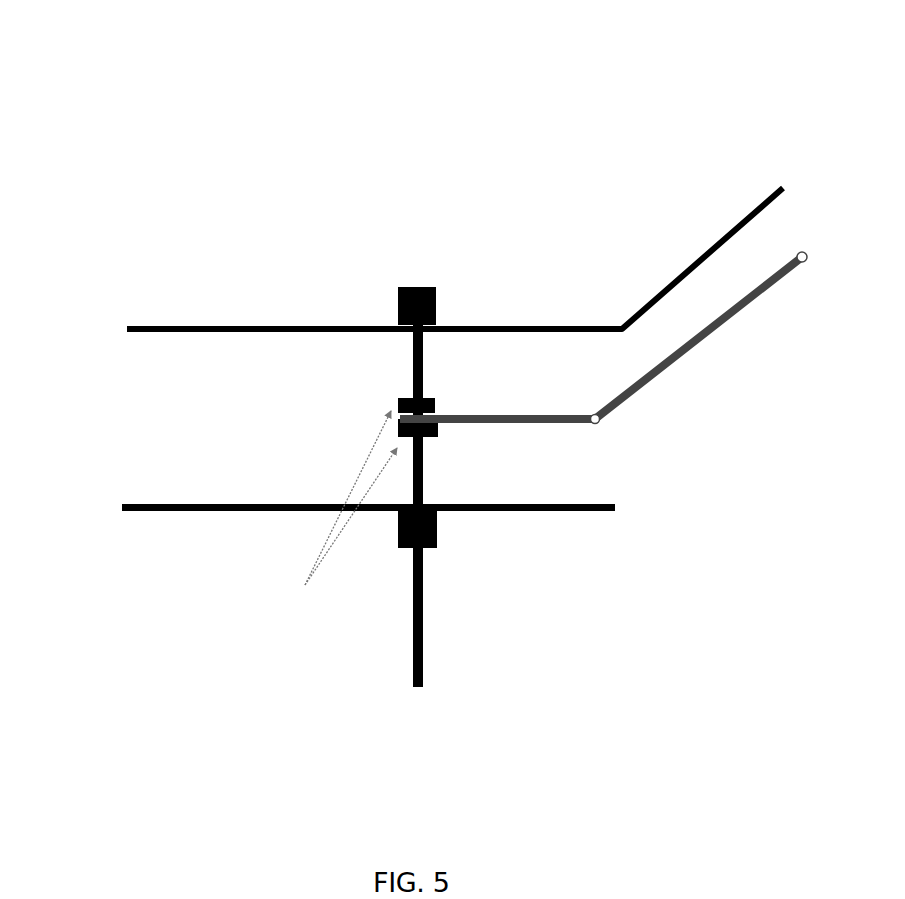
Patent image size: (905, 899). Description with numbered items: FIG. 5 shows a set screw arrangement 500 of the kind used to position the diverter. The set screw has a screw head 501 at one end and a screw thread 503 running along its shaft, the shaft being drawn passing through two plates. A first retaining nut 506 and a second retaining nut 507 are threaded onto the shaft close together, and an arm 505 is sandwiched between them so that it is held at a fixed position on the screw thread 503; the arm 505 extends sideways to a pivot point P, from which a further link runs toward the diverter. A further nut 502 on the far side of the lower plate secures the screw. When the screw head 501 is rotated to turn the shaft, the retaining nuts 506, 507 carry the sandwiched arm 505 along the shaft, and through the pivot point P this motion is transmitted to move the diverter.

The screw assembly 500 is at (117, 92).
The screw head 501 is at (436, 287).
The retaining nut (bottom) 502 is at (437, 548).
The screw thread 503 is at (424, 373).
The arm 505 is at (503, 427).
The retaining nut 506 is at (395, 403).
The retaining nut 507 is at (397, 437).
The pivot point P is at (600, 423).